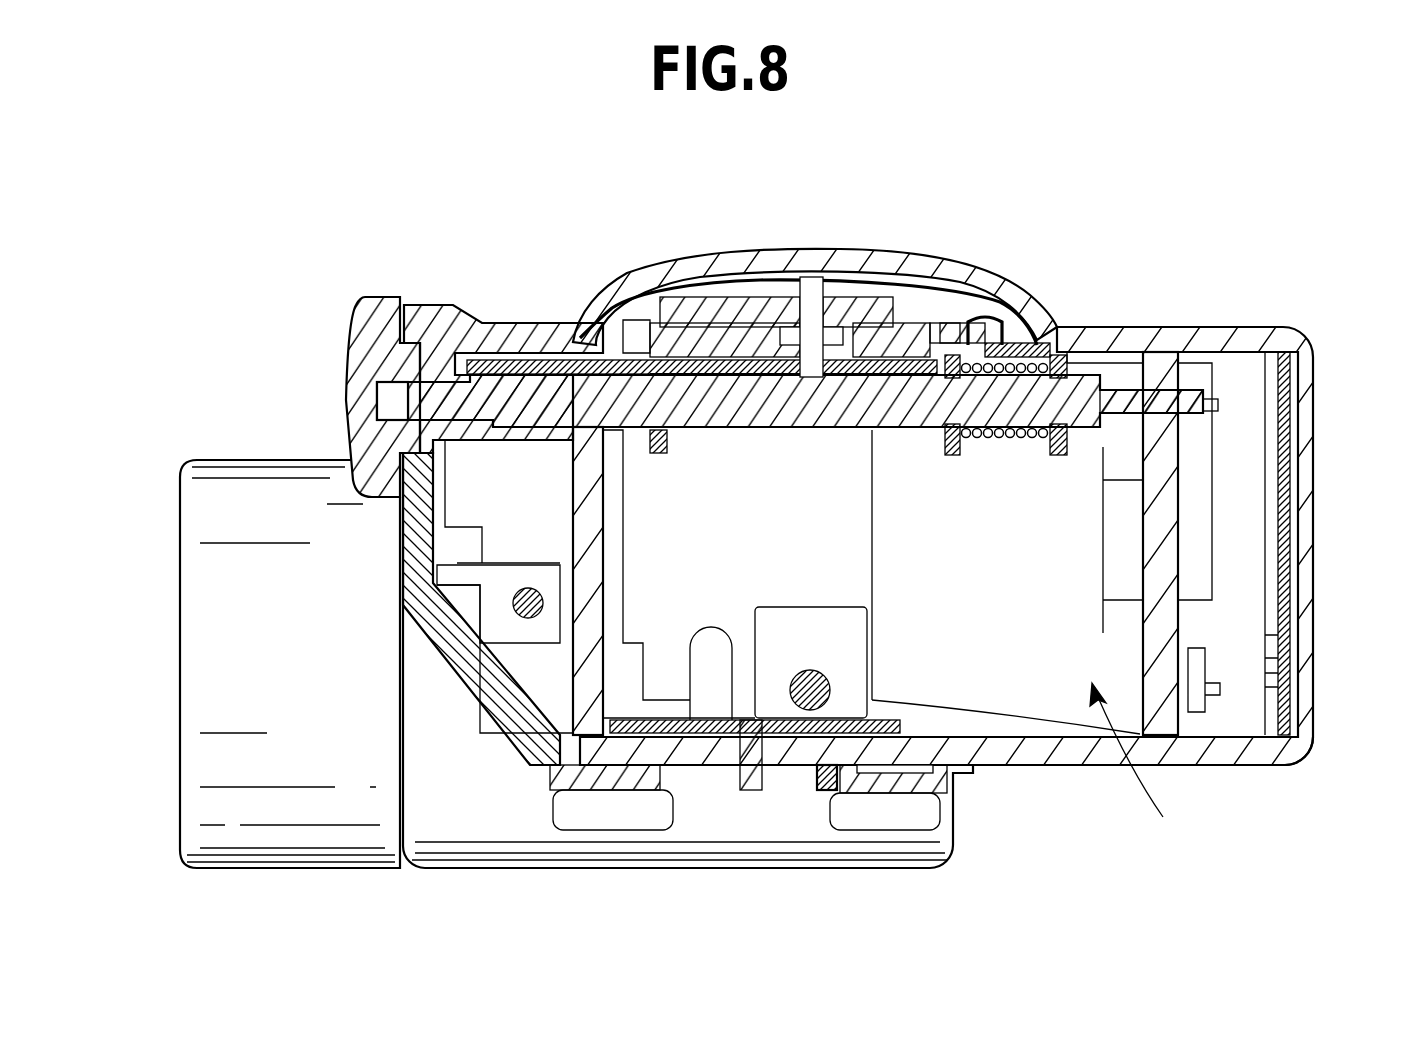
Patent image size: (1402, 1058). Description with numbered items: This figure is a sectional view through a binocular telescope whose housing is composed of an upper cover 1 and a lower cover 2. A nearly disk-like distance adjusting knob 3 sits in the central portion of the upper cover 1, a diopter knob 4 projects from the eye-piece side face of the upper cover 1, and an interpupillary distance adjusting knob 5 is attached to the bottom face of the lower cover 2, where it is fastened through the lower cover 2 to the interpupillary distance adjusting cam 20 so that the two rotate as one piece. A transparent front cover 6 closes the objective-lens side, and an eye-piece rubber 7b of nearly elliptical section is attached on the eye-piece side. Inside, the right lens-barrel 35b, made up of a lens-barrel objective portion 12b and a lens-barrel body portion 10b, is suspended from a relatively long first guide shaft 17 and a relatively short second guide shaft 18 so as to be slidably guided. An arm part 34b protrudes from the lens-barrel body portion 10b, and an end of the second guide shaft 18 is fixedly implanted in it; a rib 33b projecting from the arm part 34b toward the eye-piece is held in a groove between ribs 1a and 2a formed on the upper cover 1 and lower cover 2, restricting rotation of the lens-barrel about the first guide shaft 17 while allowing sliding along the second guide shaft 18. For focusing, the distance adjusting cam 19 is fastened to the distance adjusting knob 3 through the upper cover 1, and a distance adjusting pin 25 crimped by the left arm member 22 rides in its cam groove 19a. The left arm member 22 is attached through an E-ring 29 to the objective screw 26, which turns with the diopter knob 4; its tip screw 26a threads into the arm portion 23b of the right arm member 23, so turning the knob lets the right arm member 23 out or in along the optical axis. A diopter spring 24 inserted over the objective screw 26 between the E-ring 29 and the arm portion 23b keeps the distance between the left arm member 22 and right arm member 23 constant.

The upper cover 1 is at (1287, 345).
The rib 1a is at (450, 543).
The lower cover 2 is at (1297, 757).
The rib 2a is at (412, 594).
The distance adjusting knob 3 is at (947, 270).
The diopter knob 4 is at (382, 298).
The interpupillary distance adjusting knob 5 is at (840, 797).
The front cover 6 is at (1290, 398).
The eye-piece rubber 7b is at (238, 826).
The lens-barrel body portion 10b is at (728, 543).
The lens-barrel objective portion 12b is at (953, 548).
The first guide shaft 17 is at (828, 690).
The second guide shaft 18 is at (545, 603).
The distance adjusting cam 19 is at (778, 330).
The cam groove 19a is at (893, 335).
The interpupillary distance adjusting cam 20 is at (900, 720).
The left arm member 22 is at (690, 362).
The right arm member 23 is at (1022, 378).
The arm portion 23b is at (1067, 443).
The diopter spring 24 is at (1045, 325).
The distance adjusting pin 25 is at (935, 300).
The objective screw 26 is at (457, 397).
The screw 26a is at (1095, 395).
The E-ring 29 is at (1000, 340).
The rib 33b is at (472, 573).
The arm part 34b is at (527, 630).
The lens-barrel 35b is at (1037, 764).